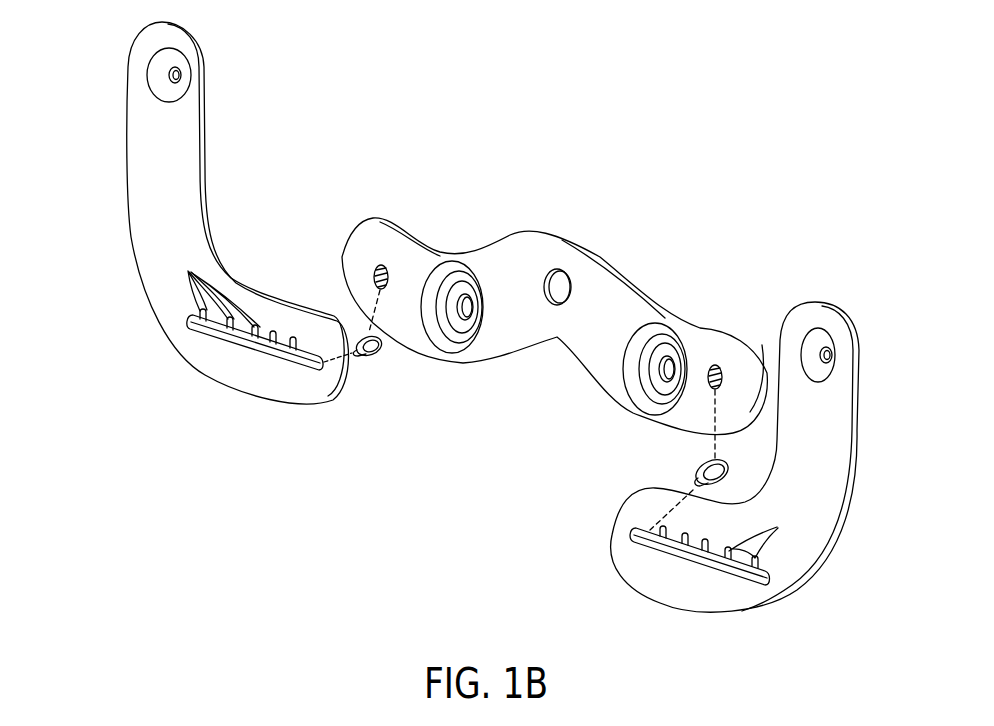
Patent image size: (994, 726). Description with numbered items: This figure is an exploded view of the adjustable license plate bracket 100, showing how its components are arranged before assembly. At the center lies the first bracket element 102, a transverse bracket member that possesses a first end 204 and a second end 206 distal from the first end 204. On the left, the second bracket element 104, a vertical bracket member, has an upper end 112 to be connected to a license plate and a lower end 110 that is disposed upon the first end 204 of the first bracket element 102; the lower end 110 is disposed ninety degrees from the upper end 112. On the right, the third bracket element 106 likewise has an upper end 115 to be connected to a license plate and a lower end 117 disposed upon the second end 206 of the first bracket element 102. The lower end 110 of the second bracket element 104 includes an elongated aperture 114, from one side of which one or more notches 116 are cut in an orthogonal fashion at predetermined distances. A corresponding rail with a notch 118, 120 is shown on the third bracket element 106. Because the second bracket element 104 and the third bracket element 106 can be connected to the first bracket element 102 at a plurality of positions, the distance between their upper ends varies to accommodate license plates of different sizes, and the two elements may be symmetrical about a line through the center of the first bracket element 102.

The bracket 100 is at (600, 220).
The first bracket element 102 is at (493, 250).
The second bracket element 104 is at (188, 130).
The third bracket element 106 is at (840, 407).
The lower end 110 is at (208, 381).
The upper end 112 is at (124, 75).
The elongated aperture 114 is at (197, 335).
The upper end 115 is at (840, 530).
The notches 116 is at (216, 284).
The lower end 117 is at (622, 578).
The second rail 118 is at (760, 587).
The fin 120 is at (777, 527).
The first end 204 is at (340, 222).
The second end 206 is at (762, 336).